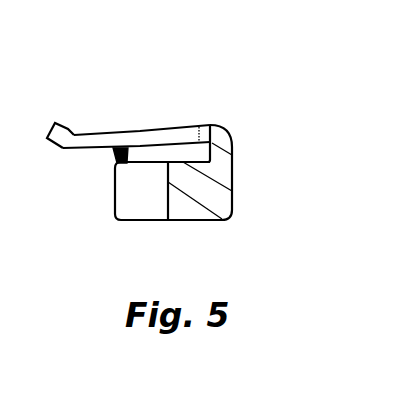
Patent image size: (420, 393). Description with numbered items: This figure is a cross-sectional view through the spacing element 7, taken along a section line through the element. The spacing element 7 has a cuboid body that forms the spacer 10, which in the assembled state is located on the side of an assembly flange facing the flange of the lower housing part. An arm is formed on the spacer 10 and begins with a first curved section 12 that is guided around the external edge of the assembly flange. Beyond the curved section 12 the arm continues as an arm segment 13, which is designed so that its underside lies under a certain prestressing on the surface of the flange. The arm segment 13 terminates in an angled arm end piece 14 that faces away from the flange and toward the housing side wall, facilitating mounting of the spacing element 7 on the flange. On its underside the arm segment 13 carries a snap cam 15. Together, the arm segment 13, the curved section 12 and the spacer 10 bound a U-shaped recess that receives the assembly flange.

The spacing element 7 is at (246, 126).
The spacer 10 is at (205, 195).
The curved section 12 is at (219, 123).
The arm segment 13 is at (128, 121).
The angled arm end piece 14 is at (64, 121).
The snap cam 15 is at (108, 158).